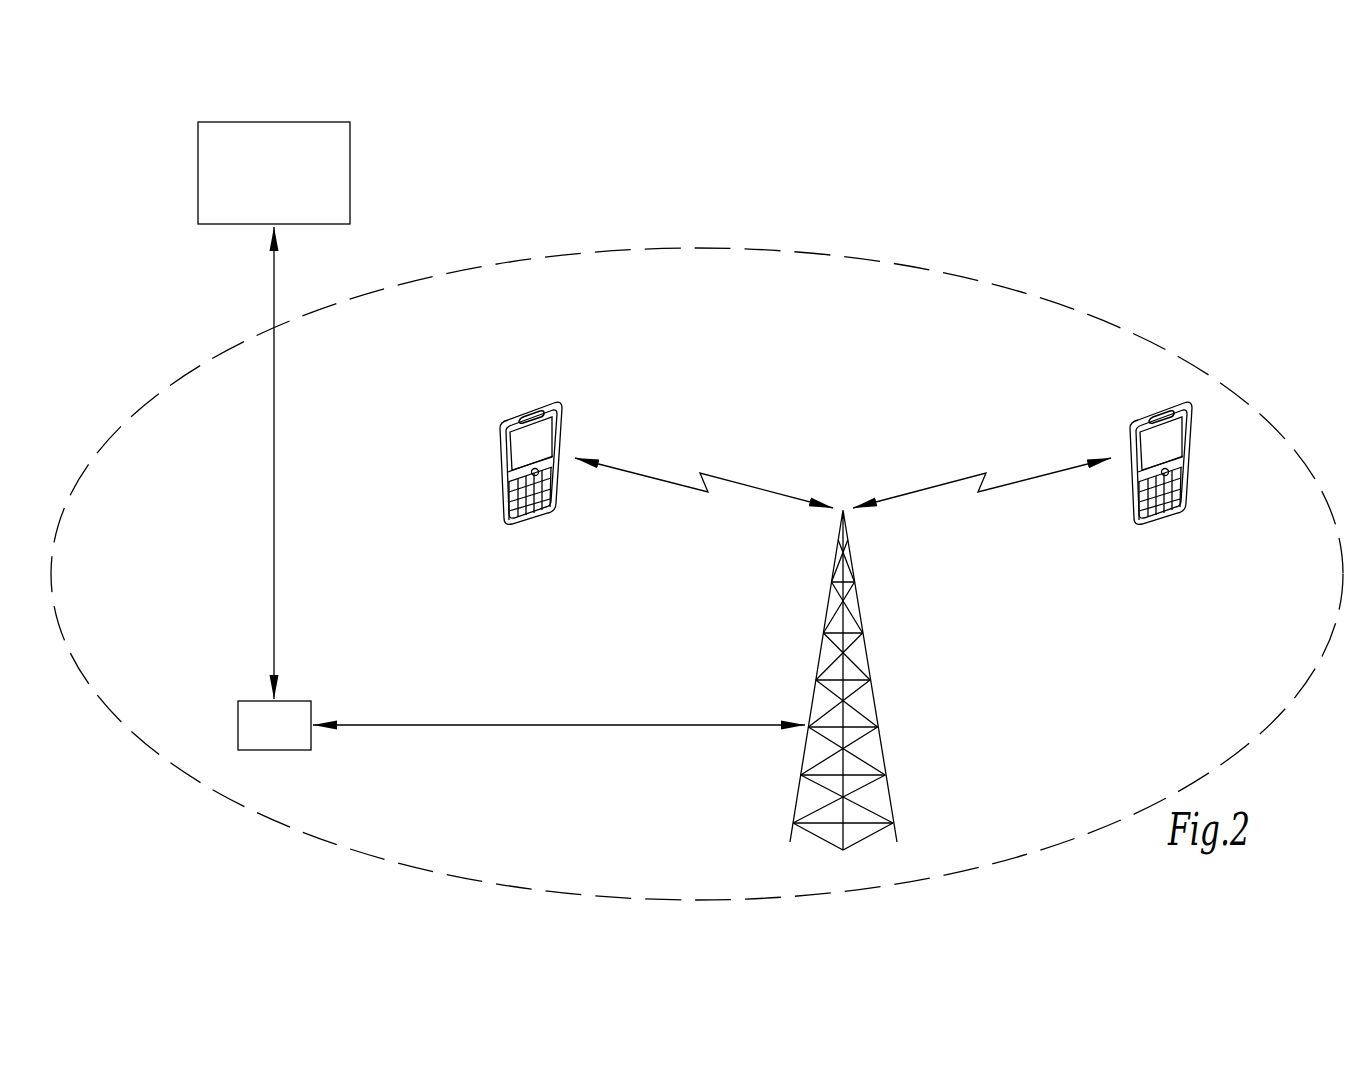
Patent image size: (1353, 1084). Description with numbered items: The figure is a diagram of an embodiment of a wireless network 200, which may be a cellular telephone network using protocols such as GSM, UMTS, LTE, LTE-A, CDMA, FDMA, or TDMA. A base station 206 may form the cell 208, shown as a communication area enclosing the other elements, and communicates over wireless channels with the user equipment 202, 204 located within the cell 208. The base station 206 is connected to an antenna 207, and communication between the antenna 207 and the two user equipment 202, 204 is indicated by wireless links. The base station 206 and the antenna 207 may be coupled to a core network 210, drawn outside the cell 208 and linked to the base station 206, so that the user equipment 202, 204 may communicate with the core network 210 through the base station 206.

The wireless network 200 is at (1152, 148).
The user equipment 202 is at (530, 399).
The user equipment 204 is at (1160, 399).
The base station 206 is at (273, 752).
The antenna 207 is at (872, 678).
The cell 208 is at (958, 273).
The core network 210 is at (275, 121).